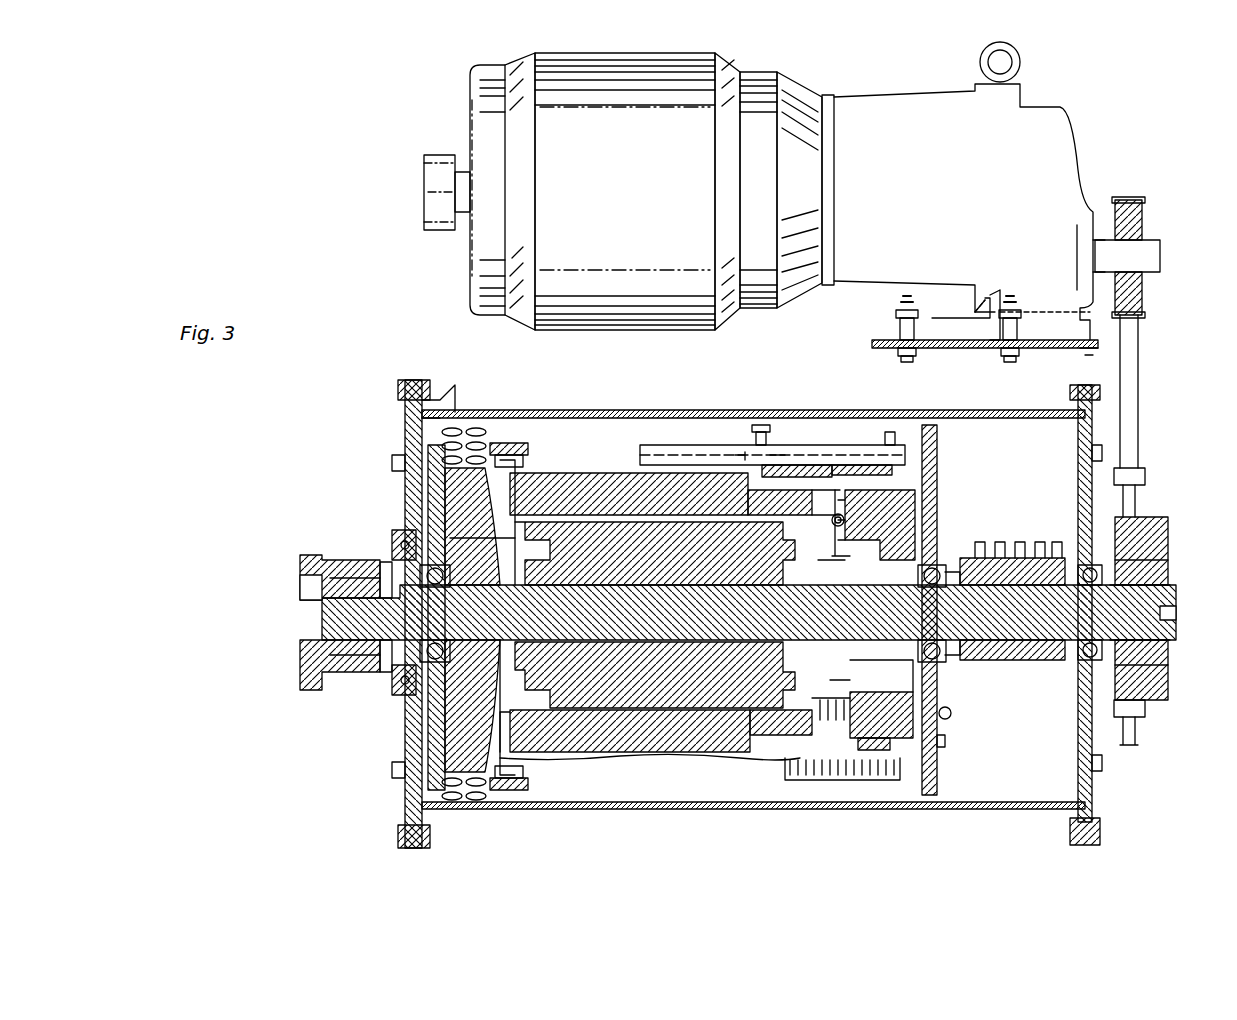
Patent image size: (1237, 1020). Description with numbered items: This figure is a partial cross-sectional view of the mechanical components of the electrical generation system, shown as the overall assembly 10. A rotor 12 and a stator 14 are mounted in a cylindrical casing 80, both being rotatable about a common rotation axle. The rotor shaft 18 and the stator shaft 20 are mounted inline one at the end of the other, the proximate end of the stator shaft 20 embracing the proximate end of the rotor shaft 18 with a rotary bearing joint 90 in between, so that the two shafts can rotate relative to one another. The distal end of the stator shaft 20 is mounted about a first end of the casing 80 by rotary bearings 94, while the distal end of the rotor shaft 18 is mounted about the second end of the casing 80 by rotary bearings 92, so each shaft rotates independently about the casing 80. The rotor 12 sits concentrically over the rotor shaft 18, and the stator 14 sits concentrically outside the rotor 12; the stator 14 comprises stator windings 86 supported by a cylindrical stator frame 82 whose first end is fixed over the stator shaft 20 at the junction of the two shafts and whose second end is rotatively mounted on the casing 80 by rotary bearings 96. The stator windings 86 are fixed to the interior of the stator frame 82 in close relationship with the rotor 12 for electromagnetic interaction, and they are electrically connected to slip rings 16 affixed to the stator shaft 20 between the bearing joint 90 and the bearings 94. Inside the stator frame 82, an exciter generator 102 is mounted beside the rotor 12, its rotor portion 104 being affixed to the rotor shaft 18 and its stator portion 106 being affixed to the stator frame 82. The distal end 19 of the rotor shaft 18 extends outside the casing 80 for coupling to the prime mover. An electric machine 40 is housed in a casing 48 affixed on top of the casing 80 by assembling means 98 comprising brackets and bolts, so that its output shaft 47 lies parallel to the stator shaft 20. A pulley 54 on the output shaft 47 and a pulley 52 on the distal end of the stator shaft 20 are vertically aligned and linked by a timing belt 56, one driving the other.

The motor assembly 10 is at (398, 312).
The rotor 12 is at (585, 680).
The stator 14 is at (630, 720).
The slip rings 16 is at (1003, 538).
The rotor shaft 18 is at (700, 620).
The distal end of the rotor shaft 19 is at (315, 625).
The stator shaft 20 is at (1020, 603).
The electric machine 40 is at (887, 78).
The output shaft 47 is at (1158, 258).
The casing 48 is at (615, 333).
The pulley 52 is at (1168, 538).
The pulley 54 is at (1142, 210).
The timing belt 56 is at (1140, 418).
The casing 80 is at (980, 812).
The stator frame 82 is at (740, 762).
The stator windings 86 is at (600, 485).
The rotary bearing joint 90 is at (945, 668).
The rotary bearings 92 is at (450, 660).
The rotary bearings 94 is at (1085, 648).
The rotary bearings 96 is at (395, 678).
The assembling means 98 is at (895, 377).
The exciter generator 102 is at (880, 740).
The rotor portion 104 is at (915, 720).
The stator portion 106 is at (860, 700).